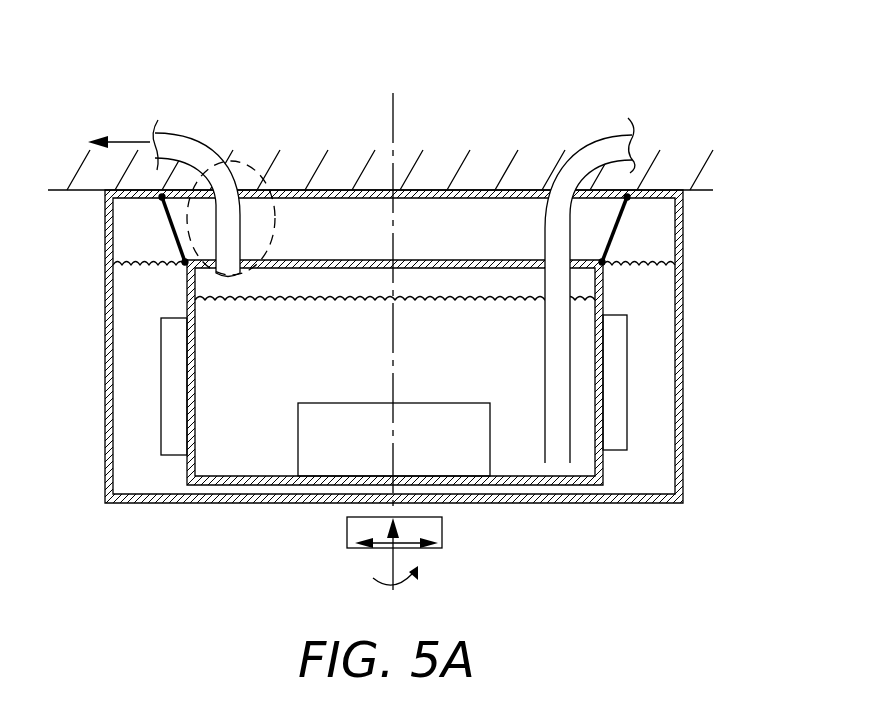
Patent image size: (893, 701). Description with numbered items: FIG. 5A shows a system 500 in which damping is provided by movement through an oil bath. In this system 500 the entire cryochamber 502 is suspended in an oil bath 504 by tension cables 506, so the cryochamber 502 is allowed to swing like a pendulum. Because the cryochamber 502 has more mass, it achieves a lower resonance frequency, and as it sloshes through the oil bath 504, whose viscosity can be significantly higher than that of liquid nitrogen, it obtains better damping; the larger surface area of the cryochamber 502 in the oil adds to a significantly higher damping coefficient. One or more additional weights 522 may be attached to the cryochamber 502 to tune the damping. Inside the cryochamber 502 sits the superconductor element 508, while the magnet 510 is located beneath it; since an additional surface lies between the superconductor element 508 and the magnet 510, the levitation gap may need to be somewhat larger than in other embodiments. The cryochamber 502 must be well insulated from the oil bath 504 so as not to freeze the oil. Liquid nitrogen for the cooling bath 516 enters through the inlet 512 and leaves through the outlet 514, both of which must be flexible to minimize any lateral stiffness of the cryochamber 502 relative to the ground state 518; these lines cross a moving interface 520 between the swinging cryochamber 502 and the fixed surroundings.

The system 500 is at (410, 334).
The cryochamber 502 is at (190, 348).
The oil bath 504 is at (650, 327).
The tension cables 506 is at (172, 230).
The superconductor element 508 is at (340, 468).
The magnet 510 is at (363, 548).
The inlet 512 is at (693, 142).
The outlet 514 is at (112, 128).
The liquid nitrogen cooling bath 516 is at (203, 405).
The ground state 518 is at (697, 197).
The moving interface 520 is at (250, 162).
The additional weights 522 is at (162, 438).